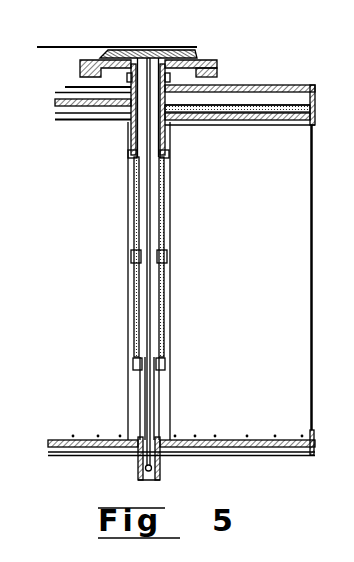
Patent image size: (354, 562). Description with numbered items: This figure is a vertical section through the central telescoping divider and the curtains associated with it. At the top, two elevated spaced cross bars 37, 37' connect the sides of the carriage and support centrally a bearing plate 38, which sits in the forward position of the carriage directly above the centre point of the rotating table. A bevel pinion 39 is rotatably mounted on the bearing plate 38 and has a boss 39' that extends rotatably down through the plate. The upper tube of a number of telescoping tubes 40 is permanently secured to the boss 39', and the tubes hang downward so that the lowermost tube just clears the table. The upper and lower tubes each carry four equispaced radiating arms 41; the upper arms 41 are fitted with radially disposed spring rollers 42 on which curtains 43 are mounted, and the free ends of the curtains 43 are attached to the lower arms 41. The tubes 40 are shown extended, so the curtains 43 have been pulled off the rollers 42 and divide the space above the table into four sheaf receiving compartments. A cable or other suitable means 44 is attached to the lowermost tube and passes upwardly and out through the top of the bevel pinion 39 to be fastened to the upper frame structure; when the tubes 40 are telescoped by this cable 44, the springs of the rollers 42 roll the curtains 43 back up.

The cross bar 37 is at (85, 73).
The cross bar 37' is at (223, 66).
The bearing plate 38 is at (198, 60).
The bevel pinion 39 is at (148, 38).
The boss 39' is at (123, 109).
The telescoping tubes 40 is at (162, 230).
The radiating arms 41 is at (297, 87).
The spring rollers 42 is at (82, 117).
The curtains 43 is at (301, 234).
The cable 44 is at (78, 35).